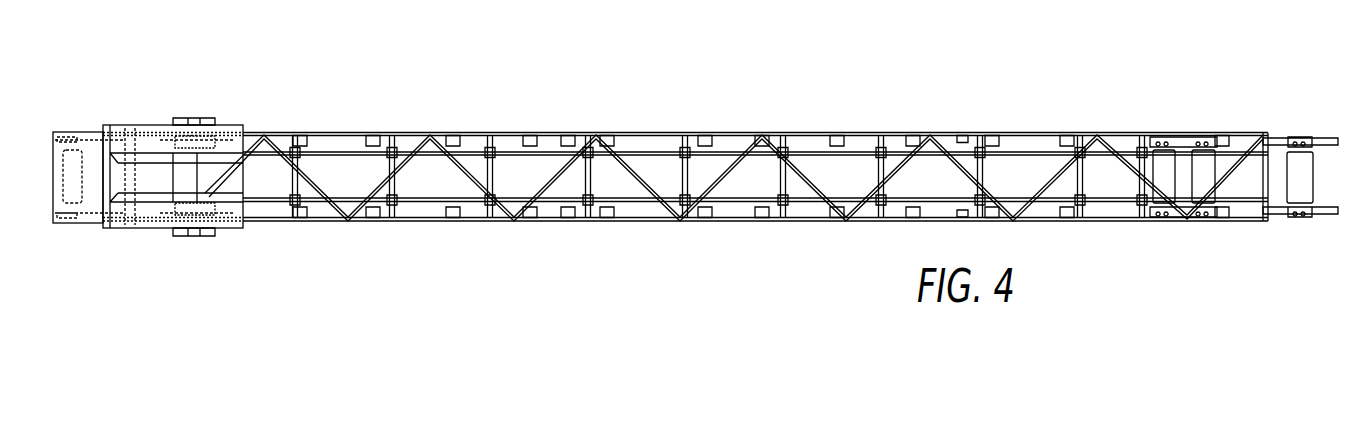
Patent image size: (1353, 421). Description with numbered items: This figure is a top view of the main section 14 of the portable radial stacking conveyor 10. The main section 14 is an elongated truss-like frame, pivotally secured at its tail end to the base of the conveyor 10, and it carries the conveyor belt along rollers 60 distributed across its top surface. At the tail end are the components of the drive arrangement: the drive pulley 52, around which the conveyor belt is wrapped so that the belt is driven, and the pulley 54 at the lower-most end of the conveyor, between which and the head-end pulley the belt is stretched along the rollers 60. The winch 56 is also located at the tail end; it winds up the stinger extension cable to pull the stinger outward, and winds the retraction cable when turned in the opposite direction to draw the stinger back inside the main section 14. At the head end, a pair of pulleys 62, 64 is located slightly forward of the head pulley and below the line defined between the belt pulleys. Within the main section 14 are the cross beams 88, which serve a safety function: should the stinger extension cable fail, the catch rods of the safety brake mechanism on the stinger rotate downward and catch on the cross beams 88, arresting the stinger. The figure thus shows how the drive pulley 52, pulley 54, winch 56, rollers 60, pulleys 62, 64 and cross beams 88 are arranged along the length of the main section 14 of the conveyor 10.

The conveyor 10 is at (455, 243).
The main section 14 is at (430, 132).
The drive pulley 52 is at (217, 186).
The pulley 54 is at (73, 165).
The winch 56 is at (1300, 163).
The rollers 60 is at (617, 222).
The pulley 62 is at (1161, 162).
The pulley 64 is at (1203, 163).
The cross beams 88 is at (898, 135).